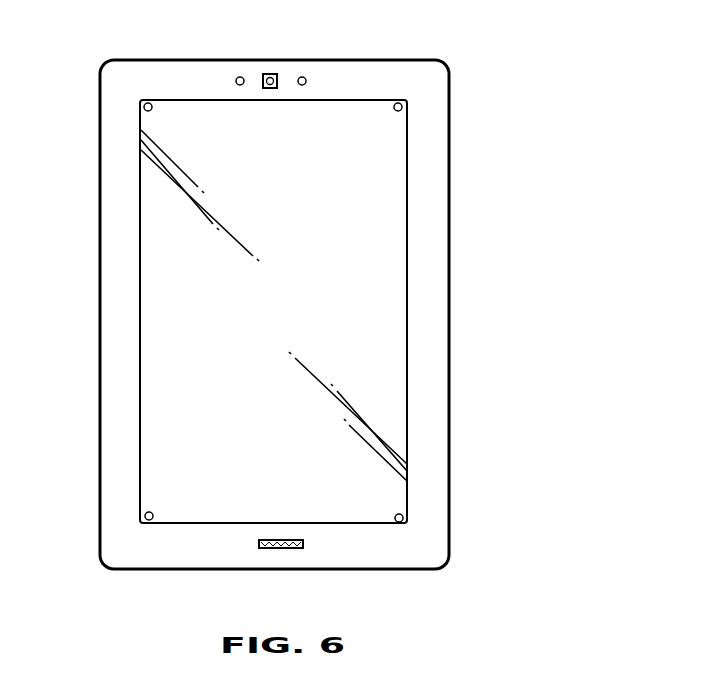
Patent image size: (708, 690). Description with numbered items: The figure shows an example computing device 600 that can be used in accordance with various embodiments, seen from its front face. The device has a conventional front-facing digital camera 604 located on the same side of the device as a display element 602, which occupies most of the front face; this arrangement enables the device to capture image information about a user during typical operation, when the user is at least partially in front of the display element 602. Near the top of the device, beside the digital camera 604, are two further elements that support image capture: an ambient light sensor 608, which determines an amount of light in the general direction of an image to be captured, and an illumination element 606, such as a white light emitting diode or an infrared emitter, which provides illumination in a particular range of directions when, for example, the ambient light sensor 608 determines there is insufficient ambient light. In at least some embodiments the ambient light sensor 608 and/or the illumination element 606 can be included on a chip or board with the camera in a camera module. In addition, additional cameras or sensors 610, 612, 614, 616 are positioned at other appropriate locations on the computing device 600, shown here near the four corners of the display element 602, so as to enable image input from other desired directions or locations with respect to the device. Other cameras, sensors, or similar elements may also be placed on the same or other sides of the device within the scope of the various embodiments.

The computing device 600 is at (597, 117).
The display element 602 is at (139, 346).
The digital camera 604 is at (268, 75).
The illumination element 606 is at (306, 79).
The ambient light sensor 608 is at (236, 80).
The camera or sensor 610 is at (144, 107).
The camera or sensor 612 is at (402, 108).
The camera or sensor 614 is at (145, 517).
The camera or sensor 616 is at (403, 519).